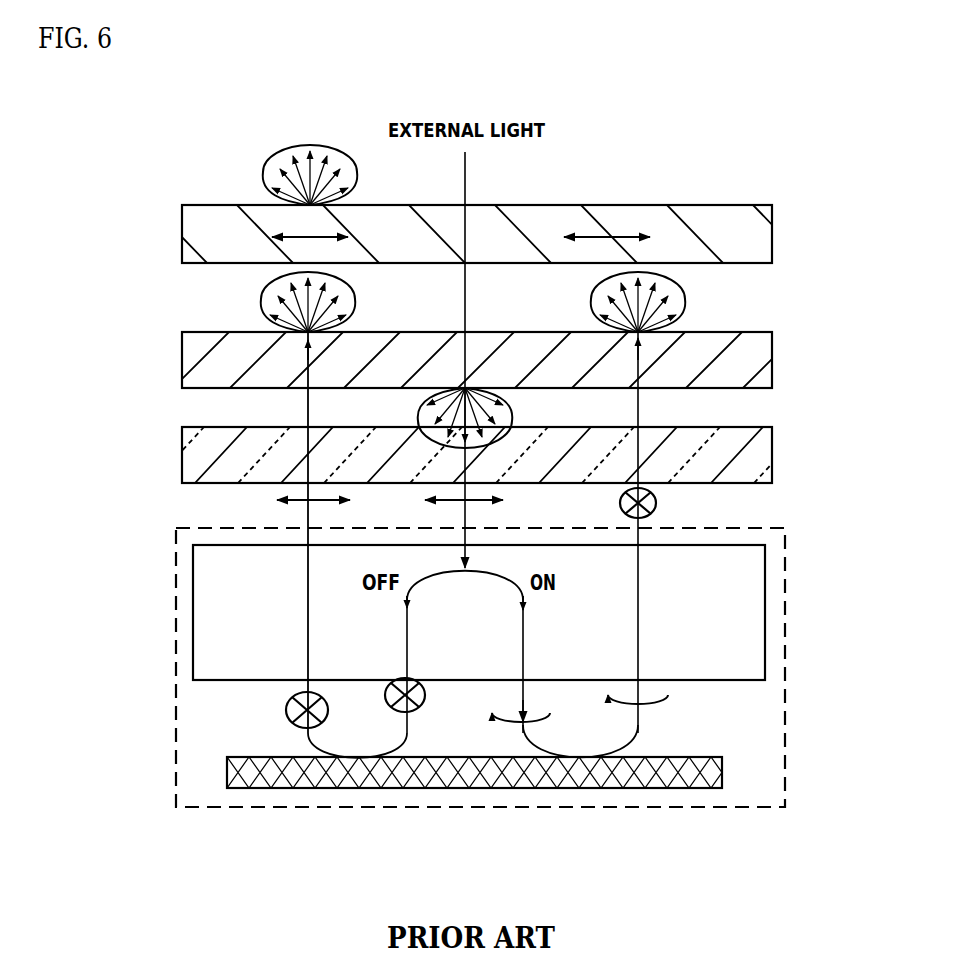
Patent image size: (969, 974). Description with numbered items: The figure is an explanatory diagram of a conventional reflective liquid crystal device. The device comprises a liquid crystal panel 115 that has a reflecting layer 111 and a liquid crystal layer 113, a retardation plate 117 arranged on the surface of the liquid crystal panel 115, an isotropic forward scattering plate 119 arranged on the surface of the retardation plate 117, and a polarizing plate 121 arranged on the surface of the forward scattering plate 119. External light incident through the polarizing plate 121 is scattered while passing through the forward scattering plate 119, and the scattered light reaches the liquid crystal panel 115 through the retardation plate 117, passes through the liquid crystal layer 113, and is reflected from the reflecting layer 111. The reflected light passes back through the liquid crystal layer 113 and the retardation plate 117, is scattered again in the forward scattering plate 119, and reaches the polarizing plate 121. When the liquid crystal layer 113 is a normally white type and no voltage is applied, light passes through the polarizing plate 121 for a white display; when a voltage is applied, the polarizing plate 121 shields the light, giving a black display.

The reflecting layer 111 is at (722, 769).
The liquid crystal layer 113 is at (765, 638).
The liquid crystal panel 115 is at (785, 570).
The retardation plate 117 is at (772, 442).
The isotropic forward scattering plate 119 is at (772, 353).
The polarizing plate 121 is at (772, 236).